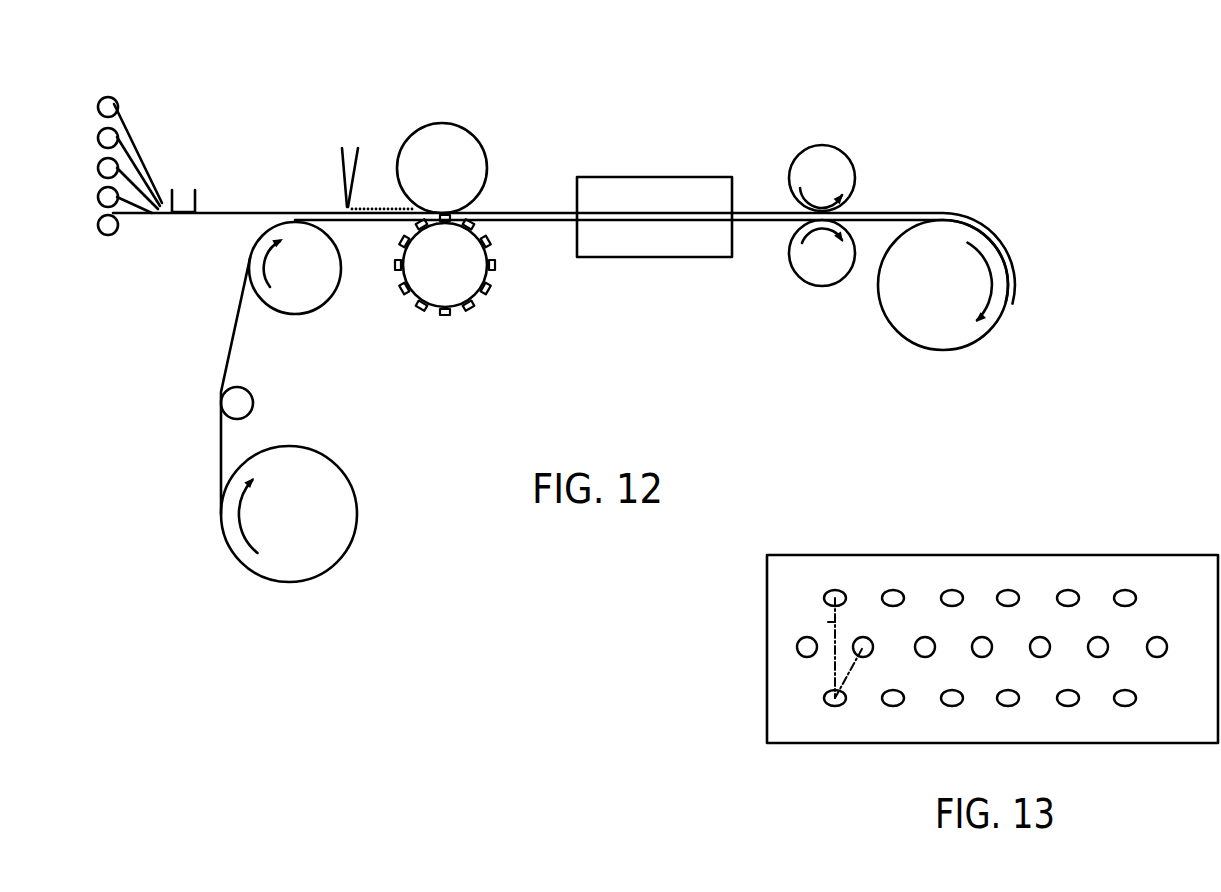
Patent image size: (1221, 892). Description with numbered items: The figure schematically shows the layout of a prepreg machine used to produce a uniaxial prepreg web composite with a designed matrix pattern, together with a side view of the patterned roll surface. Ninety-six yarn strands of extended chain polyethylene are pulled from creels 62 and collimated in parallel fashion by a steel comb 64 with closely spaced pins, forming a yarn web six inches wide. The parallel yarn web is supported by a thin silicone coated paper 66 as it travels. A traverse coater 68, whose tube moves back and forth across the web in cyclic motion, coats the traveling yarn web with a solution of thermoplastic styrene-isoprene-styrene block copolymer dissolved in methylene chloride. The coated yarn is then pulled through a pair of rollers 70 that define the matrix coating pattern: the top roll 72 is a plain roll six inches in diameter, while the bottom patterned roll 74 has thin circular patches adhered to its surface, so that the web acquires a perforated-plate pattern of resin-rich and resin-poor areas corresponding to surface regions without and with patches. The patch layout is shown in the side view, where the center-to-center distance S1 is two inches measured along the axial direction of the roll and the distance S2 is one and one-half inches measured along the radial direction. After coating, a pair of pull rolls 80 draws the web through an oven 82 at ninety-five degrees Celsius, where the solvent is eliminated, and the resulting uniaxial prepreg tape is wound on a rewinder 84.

In FIG. 12, the creels 62 is at (113, 96).
In FIG. 12, the steel comb 64 is at (185, 185).
In FIG. 12, the silicone coated paper 66 is at (236, 328).
In FIG. 12, the traverse coater 68 is at (348, 150).
In FIG. 12, the pair of rollers 70 is at (474, 188).
In FIG. 12, the top roll 72 is at (483, 155).
In FIG. 12, the bottom patterned roll 74 is at (492, 275).
In FIG. 12, the pull rolls 80 is at (855, 148).
In FIG. 12, the oven 82 is at (672, 177).
In FIG. 12, the rewinder 84 is at (888, 325).
In FIG. 13, the center-to-center distance along axial direction S1 is at (830, 622).
In FIG. 13, the center-to-center distance along radial direction S2 is at (858, 660).